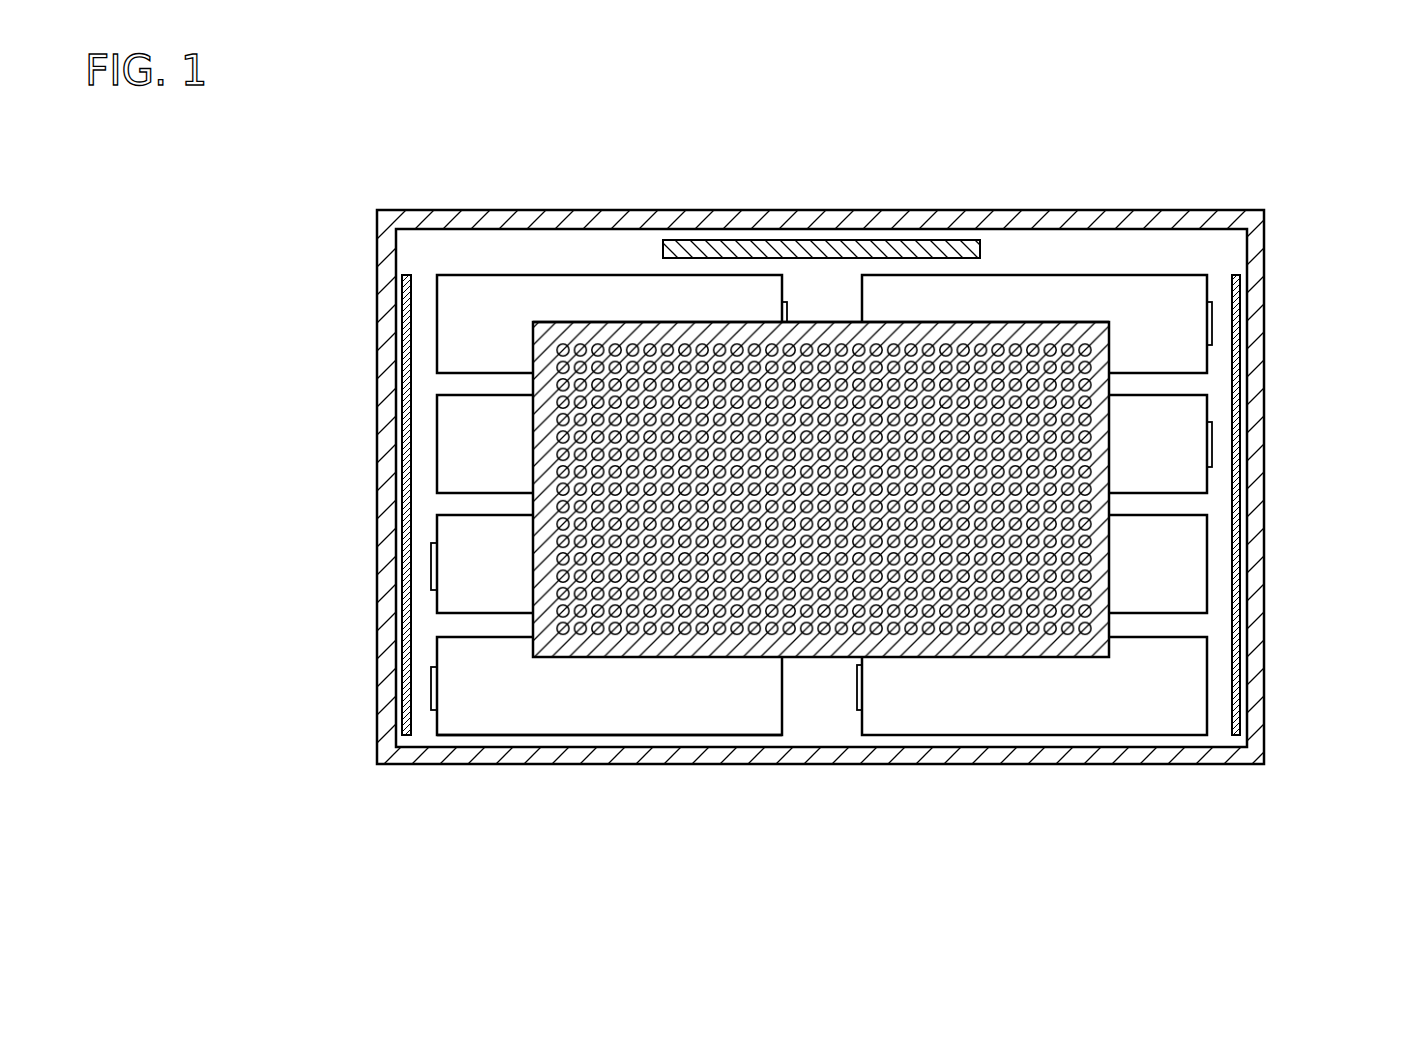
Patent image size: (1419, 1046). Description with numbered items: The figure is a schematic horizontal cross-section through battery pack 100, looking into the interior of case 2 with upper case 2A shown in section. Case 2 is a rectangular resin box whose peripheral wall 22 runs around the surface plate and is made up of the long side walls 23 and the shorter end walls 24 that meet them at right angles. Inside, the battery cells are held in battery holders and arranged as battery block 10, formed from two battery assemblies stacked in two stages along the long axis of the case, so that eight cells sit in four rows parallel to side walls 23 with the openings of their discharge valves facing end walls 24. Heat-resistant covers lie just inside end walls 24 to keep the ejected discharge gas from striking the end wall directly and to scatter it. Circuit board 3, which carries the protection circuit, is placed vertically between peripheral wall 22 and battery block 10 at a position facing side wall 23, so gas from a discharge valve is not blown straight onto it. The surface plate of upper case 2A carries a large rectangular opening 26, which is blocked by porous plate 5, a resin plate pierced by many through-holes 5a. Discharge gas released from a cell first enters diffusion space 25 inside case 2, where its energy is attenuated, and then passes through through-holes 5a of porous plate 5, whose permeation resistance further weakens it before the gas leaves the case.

The battery pack 100 is at (1253, 107).
The upper case 2A is at (1239, 191).
The case 2 is at (825, 584).
The peripheral wall 22 is at (1320, 895).
The side wall 23 is at (730, 755).
The end wall 24 is at (385, 610).
The diffusion space 25 is at (705, 707).
The opening 26 is at (600, 320).
The circuit board 3 is at (792, 247).
The battery block 10 is at (643, 120).
The porous plate 5 is at (550, 453).
The through-hole 5a is at (558, 363).